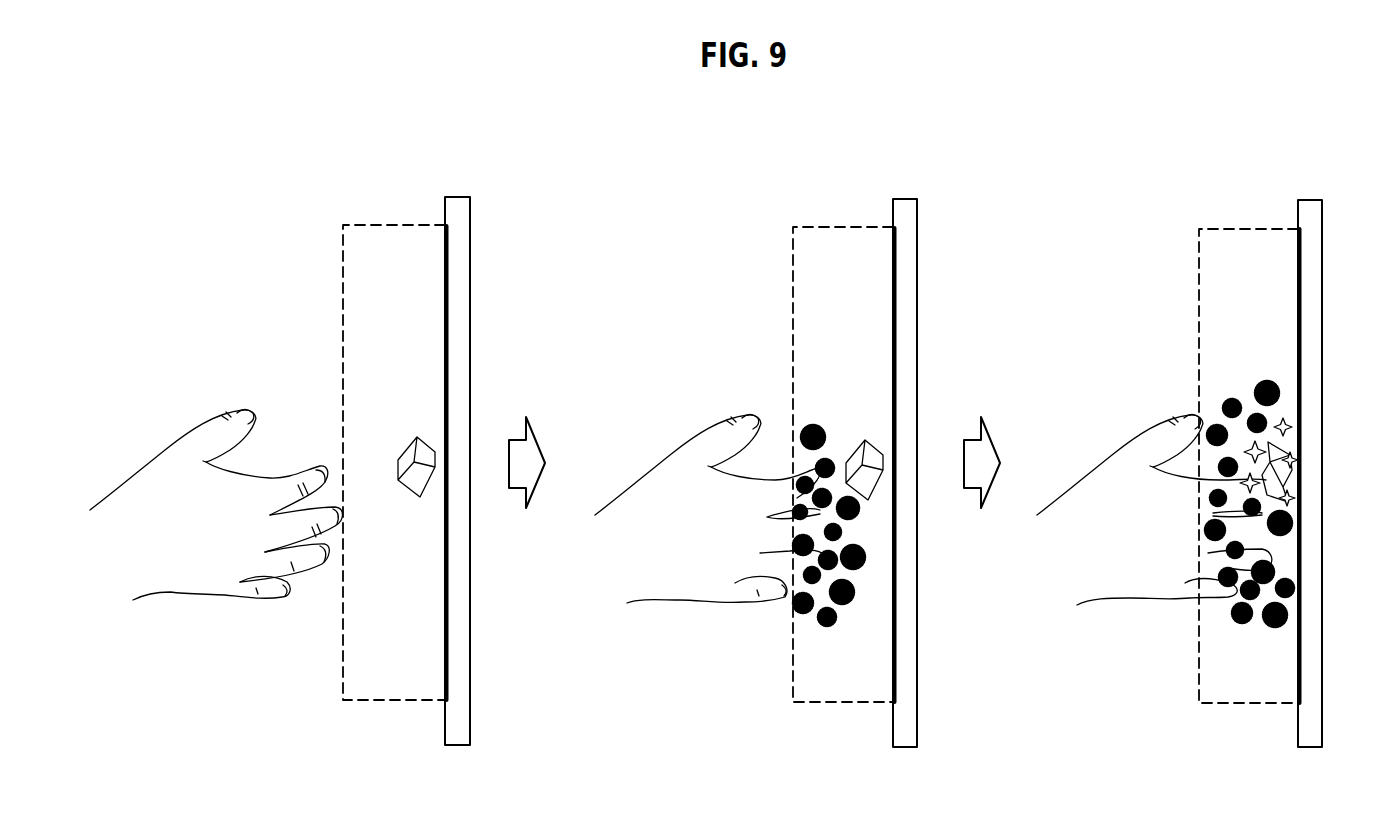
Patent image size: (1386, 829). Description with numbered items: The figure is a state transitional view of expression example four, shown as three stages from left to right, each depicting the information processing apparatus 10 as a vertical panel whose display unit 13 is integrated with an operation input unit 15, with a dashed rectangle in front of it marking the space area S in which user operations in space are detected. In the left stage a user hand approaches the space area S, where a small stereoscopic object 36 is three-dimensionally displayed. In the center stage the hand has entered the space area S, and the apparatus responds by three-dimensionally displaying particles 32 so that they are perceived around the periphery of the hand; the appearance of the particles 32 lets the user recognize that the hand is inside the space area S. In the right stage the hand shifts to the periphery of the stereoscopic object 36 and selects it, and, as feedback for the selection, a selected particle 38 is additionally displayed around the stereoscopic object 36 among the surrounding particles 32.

The information processing apparatus 10 is at (457, 197).
The display unit 13 is at (839, 432).
The operation input unit 15 is at (444, 262).
The space area S is at (334, 299).
The particles 32 is at (808, 633).
The stereoscopic object 36 is at (424, 438).
The selected particle 38 is at (1295, 483).